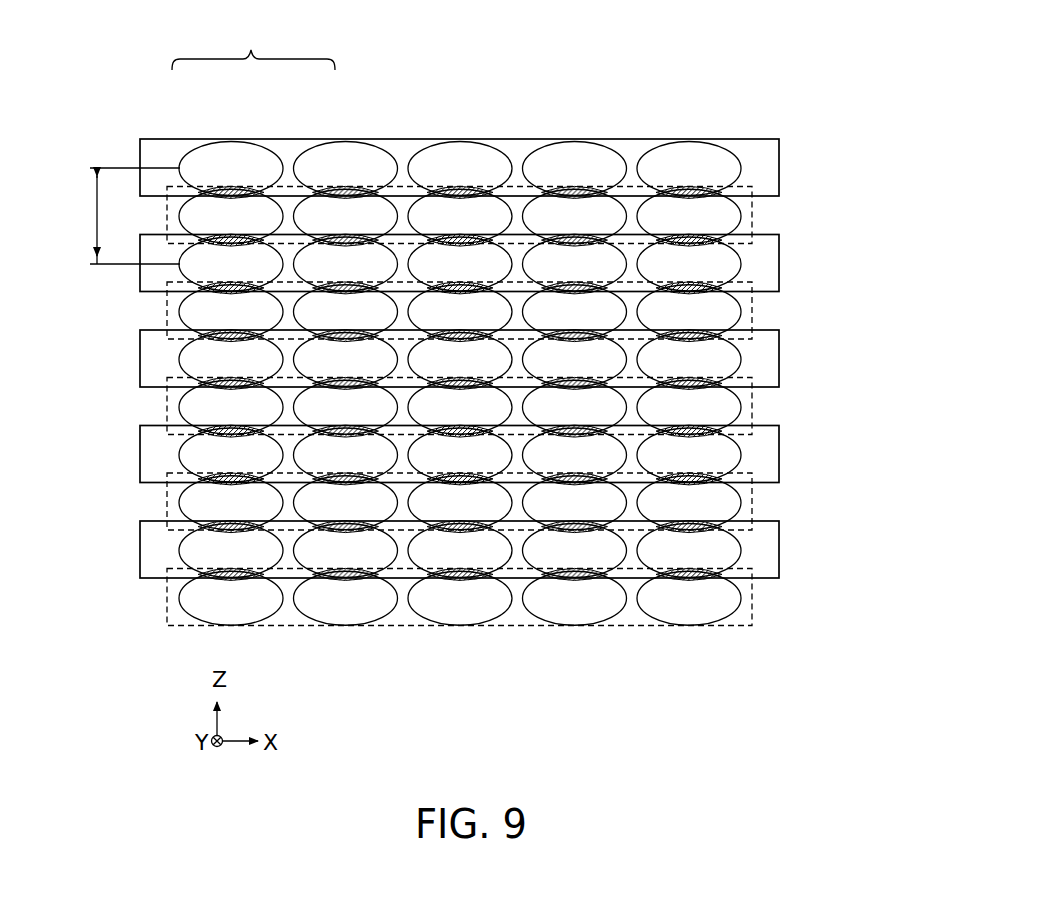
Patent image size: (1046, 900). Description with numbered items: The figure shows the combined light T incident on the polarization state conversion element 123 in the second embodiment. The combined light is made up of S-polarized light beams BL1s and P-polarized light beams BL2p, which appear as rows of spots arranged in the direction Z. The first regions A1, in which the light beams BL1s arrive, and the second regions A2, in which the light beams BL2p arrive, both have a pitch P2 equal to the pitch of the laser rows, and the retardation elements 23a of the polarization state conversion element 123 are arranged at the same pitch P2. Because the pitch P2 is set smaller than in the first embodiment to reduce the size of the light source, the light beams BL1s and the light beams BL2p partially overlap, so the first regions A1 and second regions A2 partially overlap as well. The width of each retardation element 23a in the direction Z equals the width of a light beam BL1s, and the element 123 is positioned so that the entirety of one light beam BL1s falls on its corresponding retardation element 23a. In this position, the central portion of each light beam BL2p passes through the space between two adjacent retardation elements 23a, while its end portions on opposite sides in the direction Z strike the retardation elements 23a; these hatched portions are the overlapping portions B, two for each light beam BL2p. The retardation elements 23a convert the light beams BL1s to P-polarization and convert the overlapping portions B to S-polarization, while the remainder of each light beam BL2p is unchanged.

The polarization state conversion element 123 is at (469, 318).
The retardation element 23a is at (780, 168).
The first region A1 is at (503, 324).
The second region A2 is at (753, 207).
The light beam BL1s is at (188, 149).
The light beam BL2p is at (295, 150).
The overlapping portion B is at (225, 196).
The combined light T is at (251, 50).
The pitch P2 is at (125, 216).